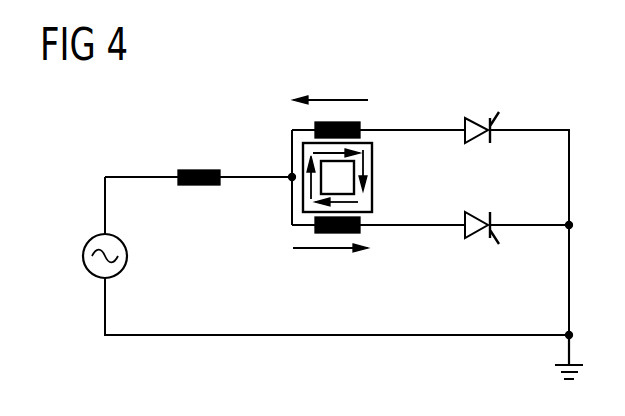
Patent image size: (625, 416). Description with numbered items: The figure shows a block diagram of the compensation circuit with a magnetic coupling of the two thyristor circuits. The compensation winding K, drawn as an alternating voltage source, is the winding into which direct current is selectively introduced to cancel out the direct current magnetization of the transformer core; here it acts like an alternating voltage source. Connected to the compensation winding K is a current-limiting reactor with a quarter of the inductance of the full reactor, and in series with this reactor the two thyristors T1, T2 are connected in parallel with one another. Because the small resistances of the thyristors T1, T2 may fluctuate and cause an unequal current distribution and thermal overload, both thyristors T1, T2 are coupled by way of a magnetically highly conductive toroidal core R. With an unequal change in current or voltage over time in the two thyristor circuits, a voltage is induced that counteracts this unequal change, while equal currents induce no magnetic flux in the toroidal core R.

The compensation winding K is at (83, 256).
The toroidal core R is at (356, 188).
The thyristor T1 is at (476, 232).
The thyristor T2 is at (478, 126).